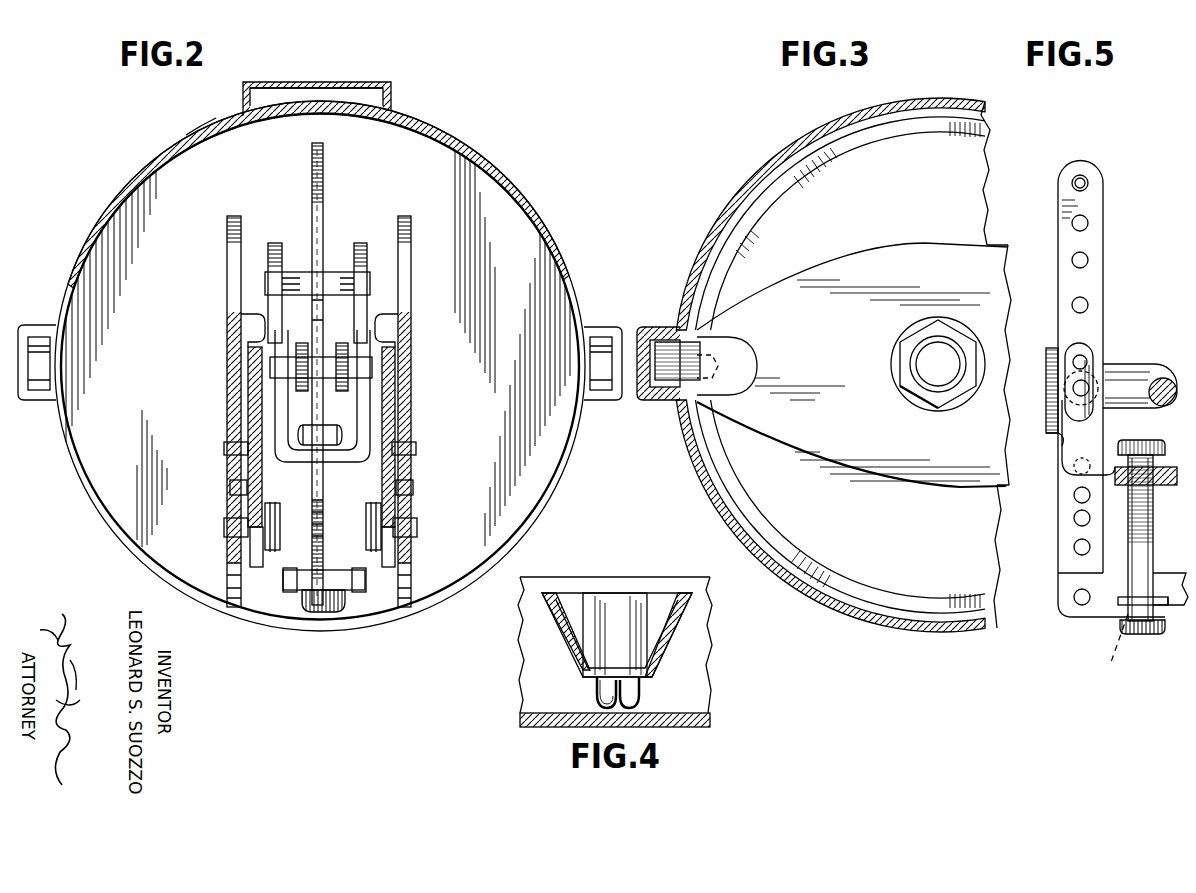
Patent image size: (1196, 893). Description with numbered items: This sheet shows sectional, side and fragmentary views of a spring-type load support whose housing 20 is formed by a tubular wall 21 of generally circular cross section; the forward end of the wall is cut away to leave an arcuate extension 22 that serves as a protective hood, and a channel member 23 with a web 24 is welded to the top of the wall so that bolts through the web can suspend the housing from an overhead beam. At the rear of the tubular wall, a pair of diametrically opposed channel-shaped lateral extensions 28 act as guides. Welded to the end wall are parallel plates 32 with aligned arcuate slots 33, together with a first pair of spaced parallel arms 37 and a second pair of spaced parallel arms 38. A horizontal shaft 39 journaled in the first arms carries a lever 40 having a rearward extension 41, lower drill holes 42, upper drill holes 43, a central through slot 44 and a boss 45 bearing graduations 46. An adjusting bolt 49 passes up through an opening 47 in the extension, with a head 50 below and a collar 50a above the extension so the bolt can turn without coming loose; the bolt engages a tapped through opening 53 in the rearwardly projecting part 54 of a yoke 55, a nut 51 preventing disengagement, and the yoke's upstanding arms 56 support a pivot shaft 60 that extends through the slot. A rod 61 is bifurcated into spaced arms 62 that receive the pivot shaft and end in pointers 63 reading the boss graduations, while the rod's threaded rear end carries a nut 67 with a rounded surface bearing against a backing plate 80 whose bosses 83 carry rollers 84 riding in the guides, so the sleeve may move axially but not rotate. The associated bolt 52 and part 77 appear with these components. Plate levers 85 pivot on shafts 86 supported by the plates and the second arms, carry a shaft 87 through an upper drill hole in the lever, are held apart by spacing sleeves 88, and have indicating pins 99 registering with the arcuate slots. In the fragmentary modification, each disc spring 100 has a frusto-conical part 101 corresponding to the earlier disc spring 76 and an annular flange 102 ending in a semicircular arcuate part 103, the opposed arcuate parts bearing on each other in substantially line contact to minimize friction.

In FIG. 2, the housing 20 is at (126, 571).
In FIG. 2, the tubular wall 21 is at (74, 490).
In FIG. 3, the tubular wall 21 is at (763, 164).
In FIG. 4, the tubular wall 21 is at (702, 724).
In FIG. 2, the arcuate extension 22 is at (197, 136).
In FIG. 2, the channel member 23 is at (277, 82).
In FIG. 2, the web 24 is at (338, 82).
In FIG. 2, the channel-shaped lateral extensions 28 is at (44, 326).
In FIG. 3, the channel-shaped lateral extensions 28 is at (660, 400).
In FIG. 2, the parallel plates 32 is at (227, 244).
In FIG. 2, the arcuate slots 33 is at (230, 487).
In FIG. 2, the first pair of spaced parallel arms 37 is at (290, 600).
In FIG. 5, the first pair of spaced parallel arms 37 is at (1168, 585).
In FIG. 2, the second pair of spaced parallel arms 38 is at (272, 503).
In FIG. 2, the horizontal shaft 39 is at (283, 580).
In FIG. 5, the horizontal shaft 39 is at (1074, 597).
In FIG. 2, the lever 40 is at (324, 176).
In FIG. 5, the lever 40 is at (1103, 264).
In FIG. 5, the rearward extension 41 is at (1105, 612).
In FIG. 5, the lower drill holes 42 is at (1080, 547).
In FIG. 5, the upper drill holes 43 is at (1082, 222).
In FIG. 5, the central through slot 44 is at (1087, 362).
In FIG. 5, the boss 45 is at (1058, 450).
In FIG. 5, the graduations 46 is at (1050, 350).
In FIG. 5, the opening 47 is at (1111, 649).
In FIG. 2, the adjusting bolt 49 is at (333, 523).
In FIG. 5, the adjusting bolt 49 is at (1153, 532).
In FIG. 5, the head 50 is at (1145, 634).
In FIG. 5, the collar 50a is at (1170, 606).
In FIG. 5, the nut 51 is at (1140, 440).
In FIG. 2, the bolt 52 is at (357, 422).
In FIG. 5, the tapped through opening 53 is at (1074, 495).
In FIG. 5, the rearwardly projecting part 54 is at (1172, 485).
In FIG. 5, the yoke 55 is at (1090, 462).
In FIG. 2, the upstanding arms 56 is at (280, 408).
In FIG. 5, the upstanding arms 56 is at (1058, 442).
In FIG. 2, the pivot shaft 60 is at (282, 372).
In FIG. 5, the pivot shaft 60 is at (1076, 392).
In FIG. 2, the rod 61 is at (323, 272).
In FIG. 3, the rod 61 is at (935, 366).
In FIG. 5, the rod 61 is at (1140, 376).
In FIG. 2, the spaced arms 62 is at (300, 343).
In FIG. 5, the pointer 63 is at (1066, 392).
In FIG. 3, the nut 67 is at (915, 354).
In FIG. 3, the disc spring 76 is at (985, 172).
In FIG. 3, the shell half 77 is at (898, 127).
In FIG. 3, the backing plate 80 is at (822, 272).
In FIG. 3, the bosses 83 is at (688, 338).
In FIG. 3, the roller 84 is at (656, 345).
In FIG. 2, the plate levers 85 is at (258, 323).
In FIG. 2, the shafts 86 is at (224, 528).
In FIG. 2, the shaft 87 is at (265, 282).
In FIG. 2, the spacing sleeves 88 is at (310, 272).
In FIG. 2, the indicating pins 99 is at (224, 448).
In FIG. 4, the disc spring 100 is at (548, 628).
In FIG. 4, the frusto-conical part 101 is at (566, 648).
In FIG. 4, the annular flange 102 is at (597, 694).
In FIG. 4, the arcuate part 103 is at (592, 704).